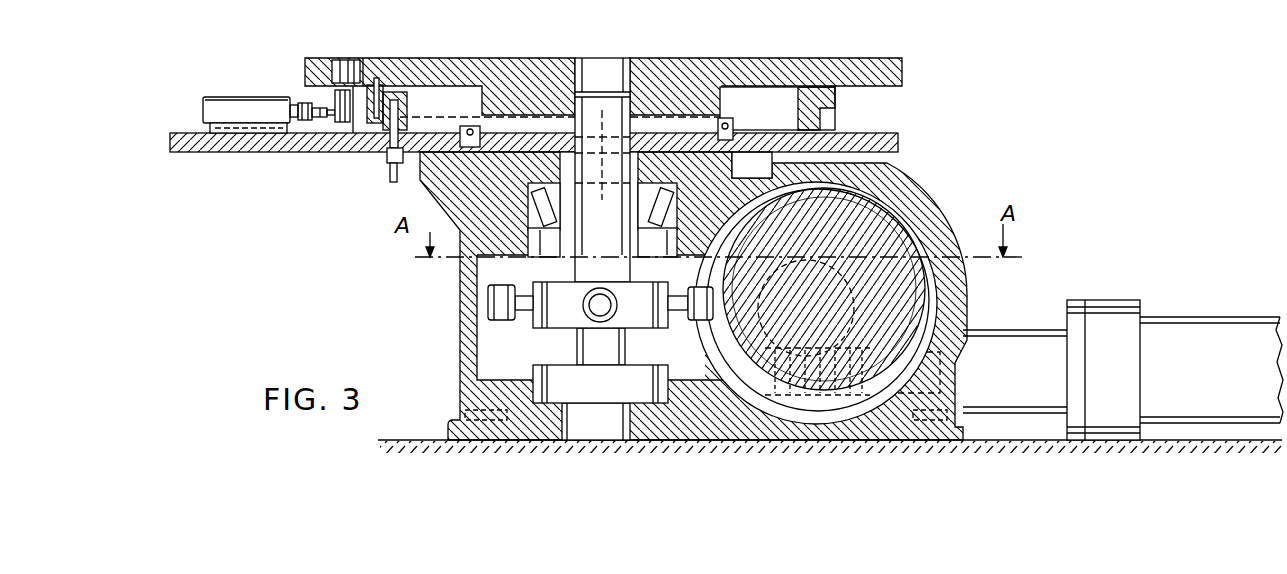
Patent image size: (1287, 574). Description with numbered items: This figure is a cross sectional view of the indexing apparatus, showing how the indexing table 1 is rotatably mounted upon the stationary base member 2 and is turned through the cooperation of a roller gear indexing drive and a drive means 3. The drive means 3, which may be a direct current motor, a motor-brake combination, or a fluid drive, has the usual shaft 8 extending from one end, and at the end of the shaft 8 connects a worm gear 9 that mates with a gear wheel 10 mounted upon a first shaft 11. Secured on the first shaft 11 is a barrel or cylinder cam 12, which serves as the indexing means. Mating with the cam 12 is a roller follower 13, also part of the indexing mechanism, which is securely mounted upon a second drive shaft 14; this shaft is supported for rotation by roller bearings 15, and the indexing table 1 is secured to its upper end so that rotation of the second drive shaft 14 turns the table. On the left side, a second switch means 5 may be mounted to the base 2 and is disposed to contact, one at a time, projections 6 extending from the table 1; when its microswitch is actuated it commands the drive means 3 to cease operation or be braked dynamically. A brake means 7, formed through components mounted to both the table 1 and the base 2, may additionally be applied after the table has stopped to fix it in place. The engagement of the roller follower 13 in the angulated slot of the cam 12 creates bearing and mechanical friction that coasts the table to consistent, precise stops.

The table 1 is at (903, 62).
The base member 2 is at (886, 134).
The drive means 3 is at (1160, 333).
The second switch means 5 is at (205, 107).
The projections 6 is at (347, 121).
The brake means 7 is at (410, 113).
The shaft 8 is at (966, 306).
The worm gear 9 is at (822, 405).
The gear wheel 10 is at (708, 354).
The first shaft 11 is at (832, 266).
The cam 12 is at (892, 213).
The roller follower 13 is at (532, 320).
The second drive shaft 14 is at (580, 348).
The roller bearings 15 is at (536, 200).